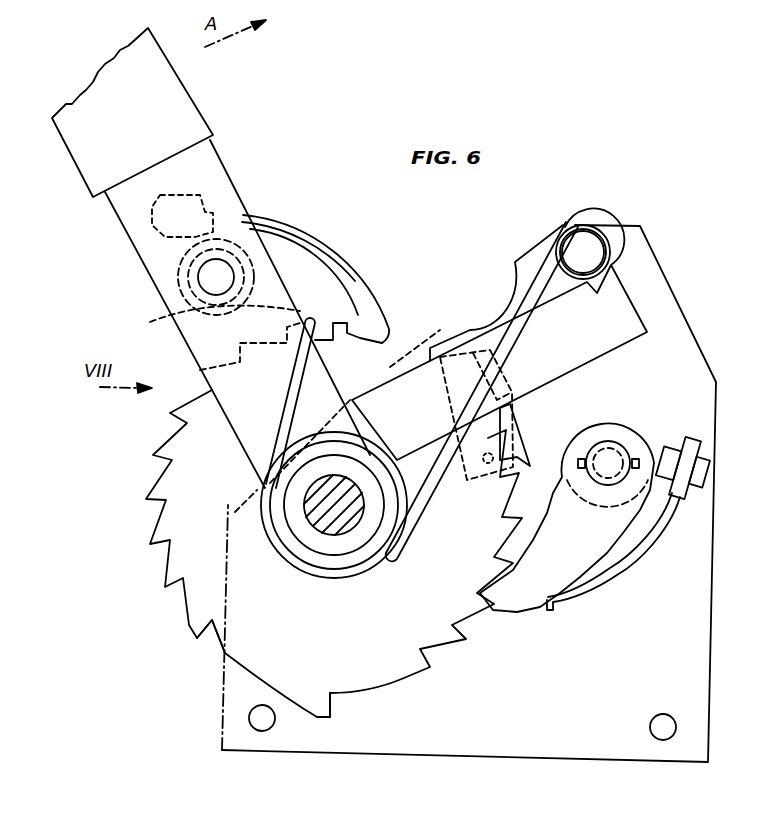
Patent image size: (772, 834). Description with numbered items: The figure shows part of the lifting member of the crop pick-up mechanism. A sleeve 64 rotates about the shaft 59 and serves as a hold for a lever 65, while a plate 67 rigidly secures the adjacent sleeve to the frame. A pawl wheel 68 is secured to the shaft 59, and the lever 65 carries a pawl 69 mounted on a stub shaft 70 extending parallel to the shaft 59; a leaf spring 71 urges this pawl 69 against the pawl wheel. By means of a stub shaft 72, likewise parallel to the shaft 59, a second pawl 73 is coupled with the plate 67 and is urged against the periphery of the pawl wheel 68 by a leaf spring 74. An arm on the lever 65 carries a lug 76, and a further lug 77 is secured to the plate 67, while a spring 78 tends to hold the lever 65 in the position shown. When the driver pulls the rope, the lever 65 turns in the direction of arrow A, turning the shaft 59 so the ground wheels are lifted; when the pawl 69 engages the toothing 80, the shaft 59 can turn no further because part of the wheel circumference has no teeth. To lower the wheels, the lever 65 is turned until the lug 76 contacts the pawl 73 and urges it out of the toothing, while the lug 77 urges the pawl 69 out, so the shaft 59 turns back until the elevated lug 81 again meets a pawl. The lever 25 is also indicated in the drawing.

The lever arm 25 is at (640, 330).
The shaft 59 is at (330, 527).
The sleeve 64 is at (305, 538).
The lever 65 is at (192, 118).
The plate 67 is at (448, 493).
The pawl wheel 68 is at (399, 668).
The pawl 69 is at (375, 284).
The stub shaft 70 is at (210, 292).
The leaf spring 71 is at (272, 215).
The stub shaft 72 is at (619, 442).
The pawl 73 is at (557, 526).
The leaf spring 74 is at (592, 592).
The lug 76 is at (540, 362).
The lug 77 is at (512, 424).
The spring 78 is at (386, 552).
The toothing 80 is at (200, 643).
The elevated lug 81 is at (322, 716).